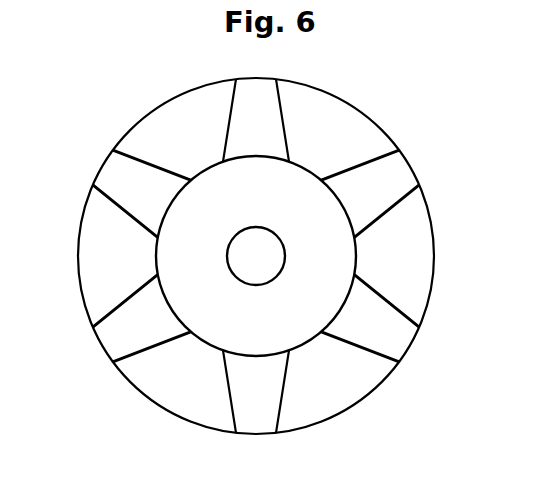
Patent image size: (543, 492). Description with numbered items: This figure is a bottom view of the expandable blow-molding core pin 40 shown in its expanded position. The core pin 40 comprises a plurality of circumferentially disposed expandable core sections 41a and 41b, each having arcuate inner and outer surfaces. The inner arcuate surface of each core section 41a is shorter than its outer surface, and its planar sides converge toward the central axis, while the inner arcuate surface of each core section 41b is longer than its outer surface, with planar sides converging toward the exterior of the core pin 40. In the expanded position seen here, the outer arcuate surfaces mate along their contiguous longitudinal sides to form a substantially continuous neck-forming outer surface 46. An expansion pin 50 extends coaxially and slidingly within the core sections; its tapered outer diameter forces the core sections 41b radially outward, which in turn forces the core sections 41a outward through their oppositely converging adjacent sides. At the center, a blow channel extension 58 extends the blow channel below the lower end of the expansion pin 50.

The expandable blow-molding core pin 40 is at (151, 104).
The expandable core section 41a is at (335, 121).
The expandable core section 41b is at (387, 181).
The neck-forming outer surface 46 is at (79, 281).
The expansion pin 50 is at (217, 325).
The blow channel extension 58 is at (262, 272).